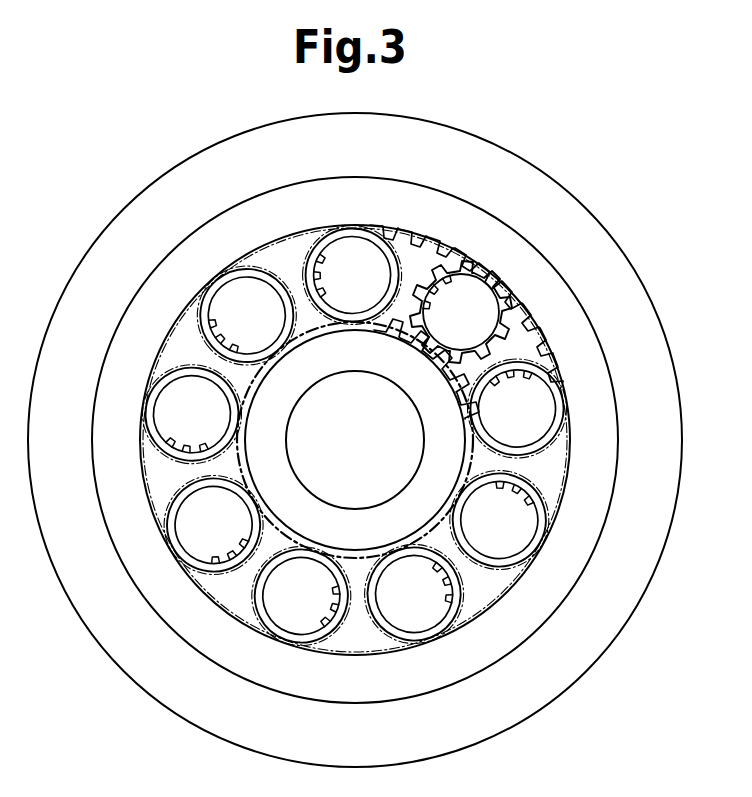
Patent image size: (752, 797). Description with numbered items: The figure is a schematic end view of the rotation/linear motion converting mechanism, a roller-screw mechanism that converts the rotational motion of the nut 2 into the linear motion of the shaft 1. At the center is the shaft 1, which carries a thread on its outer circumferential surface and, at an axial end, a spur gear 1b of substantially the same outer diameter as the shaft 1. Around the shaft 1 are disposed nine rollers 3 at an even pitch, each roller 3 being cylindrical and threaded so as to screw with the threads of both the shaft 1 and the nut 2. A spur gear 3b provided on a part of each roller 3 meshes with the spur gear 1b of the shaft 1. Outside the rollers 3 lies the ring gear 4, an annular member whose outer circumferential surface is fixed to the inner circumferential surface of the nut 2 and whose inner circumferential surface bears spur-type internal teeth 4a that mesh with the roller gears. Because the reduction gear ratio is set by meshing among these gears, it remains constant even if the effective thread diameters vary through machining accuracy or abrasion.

The shaft 1 is at (442, 438).
The spur gear 1b is at (453, 359).
The nut 2 is at (657, 304).
The roller 3 is at (488, 265).
The spur gear 3b is at (503, 285).
The ring gear 4 is at (402, 433).
The internal teeth 4a is at (512, 300).